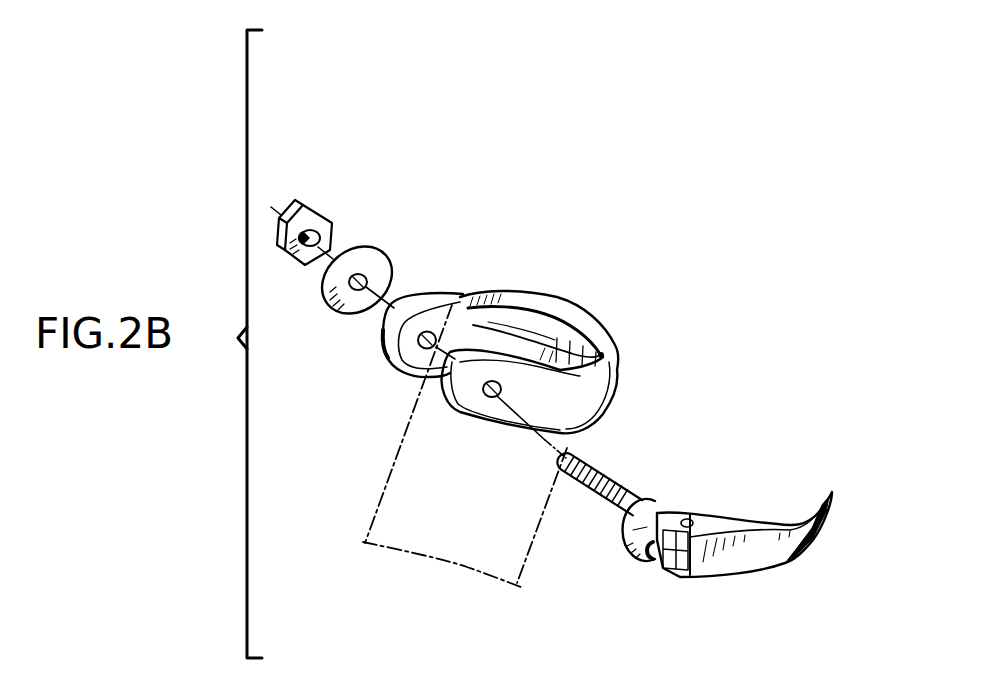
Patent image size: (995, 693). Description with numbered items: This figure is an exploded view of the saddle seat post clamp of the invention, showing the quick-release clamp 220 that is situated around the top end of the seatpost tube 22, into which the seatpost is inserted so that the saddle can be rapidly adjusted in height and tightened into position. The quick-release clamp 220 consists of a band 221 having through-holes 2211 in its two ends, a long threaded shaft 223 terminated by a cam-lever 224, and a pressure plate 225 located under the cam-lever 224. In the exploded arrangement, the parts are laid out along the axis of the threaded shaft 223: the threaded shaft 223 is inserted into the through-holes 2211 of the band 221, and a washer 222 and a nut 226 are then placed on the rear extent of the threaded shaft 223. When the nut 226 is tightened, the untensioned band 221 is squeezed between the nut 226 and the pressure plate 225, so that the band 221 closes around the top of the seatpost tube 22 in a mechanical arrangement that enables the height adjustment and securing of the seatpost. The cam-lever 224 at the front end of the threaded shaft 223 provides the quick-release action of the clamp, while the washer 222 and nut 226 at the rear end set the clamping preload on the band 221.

The quick-release clamp 220 is at (345, 132).
The band 221 is at (540, 310).
The through-holes 2211 is at (488, 398).
The washer 222 is at (373, 255).
The threaded shaft 223 is at (607, 480).
The cam-lever 224 is at (760, 562).
The pressure plate 225 is at (640, 557).
The nut 226 is at (323, 215).
The seatpost tube 22 is at (393, 473).